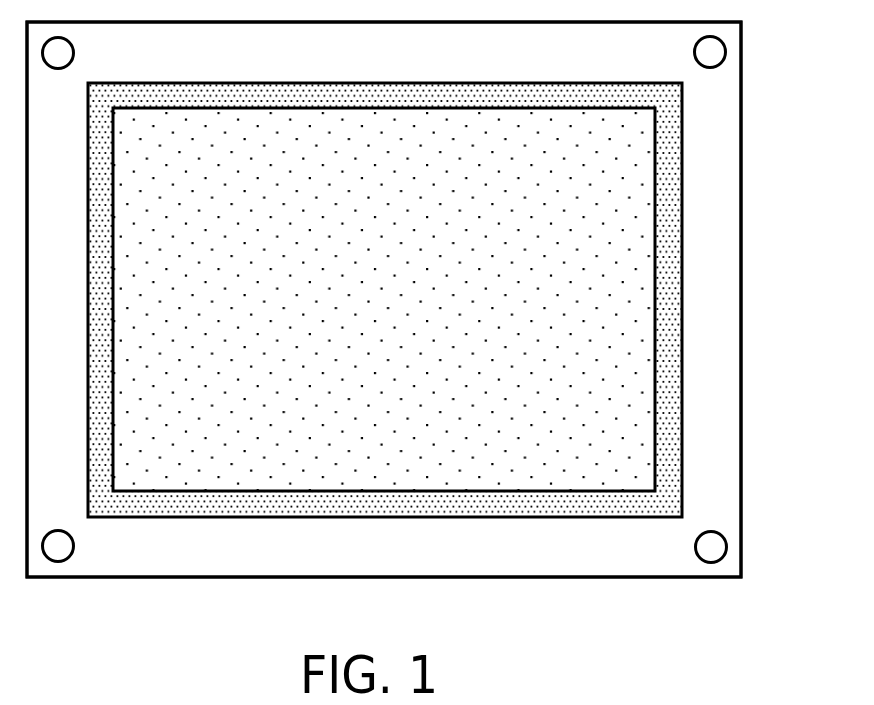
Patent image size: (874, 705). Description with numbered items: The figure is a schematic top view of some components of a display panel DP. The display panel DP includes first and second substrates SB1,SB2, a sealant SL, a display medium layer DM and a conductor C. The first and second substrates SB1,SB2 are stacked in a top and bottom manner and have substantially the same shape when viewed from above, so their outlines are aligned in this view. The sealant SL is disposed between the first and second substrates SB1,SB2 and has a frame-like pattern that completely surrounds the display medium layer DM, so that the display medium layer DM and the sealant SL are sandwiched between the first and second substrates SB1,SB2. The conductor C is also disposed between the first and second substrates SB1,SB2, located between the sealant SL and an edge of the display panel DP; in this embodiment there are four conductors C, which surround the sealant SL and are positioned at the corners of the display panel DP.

The conductor C is at (713, 52).
The first substrate and second substrate SB1,SB2 is at (723, 152).
The sealant SL is at (668, 216).
The display medium layer DM is at (638, 330).
The display panel DP is at (790, 632).